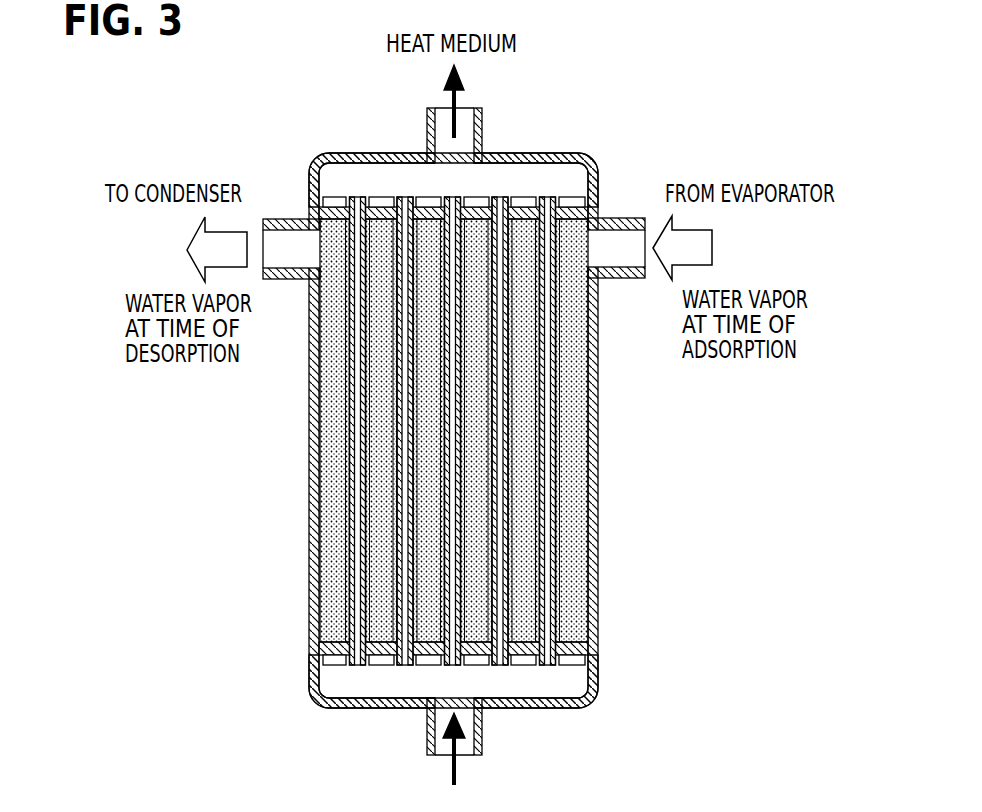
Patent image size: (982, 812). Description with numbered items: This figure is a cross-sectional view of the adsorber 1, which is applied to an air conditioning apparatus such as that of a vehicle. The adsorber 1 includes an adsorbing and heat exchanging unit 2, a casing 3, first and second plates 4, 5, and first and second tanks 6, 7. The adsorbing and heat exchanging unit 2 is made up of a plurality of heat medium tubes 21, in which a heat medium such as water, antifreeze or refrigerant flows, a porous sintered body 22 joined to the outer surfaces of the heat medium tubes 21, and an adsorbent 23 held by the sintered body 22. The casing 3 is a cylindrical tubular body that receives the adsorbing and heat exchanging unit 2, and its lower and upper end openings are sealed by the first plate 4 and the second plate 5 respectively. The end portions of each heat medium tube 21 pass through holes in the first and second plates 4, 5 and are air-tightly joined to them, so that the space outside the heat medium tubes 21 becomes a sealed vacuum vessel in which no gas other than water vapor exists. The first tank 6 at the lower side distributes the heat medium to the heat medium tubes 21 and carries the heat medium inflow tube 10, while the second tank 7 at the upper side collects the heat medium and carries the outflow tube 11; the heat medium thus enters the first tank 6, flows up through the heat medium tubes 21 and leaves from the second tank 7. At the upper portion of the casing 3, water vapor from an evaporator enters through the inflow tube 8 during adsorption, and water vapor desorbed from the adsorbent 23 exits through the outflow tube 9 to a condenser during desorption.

The adsorber 1 is at (664, 94).
The adsorbing and heat exchanging unit 2 is at (392, 431).
The heat medium tube 21 is at (340, 443).
The sintered body 22 is at (335, 473).
The adsorbent 23 is at (232, 423).
The casing 3 is at (599, 424).
The first plate 4 is at (590, 650).
The second plate 5 is at (588, 206).
The first tank 6 is at (507, 708).
The second tank 7 is at (546, 154).
The inflow tube 8 is at (622, 218).
The outflow tube 9 is at (292, 219).
The inflow tube 10 is at (427, 740).
The outflow tube 11 is at (482, 115).